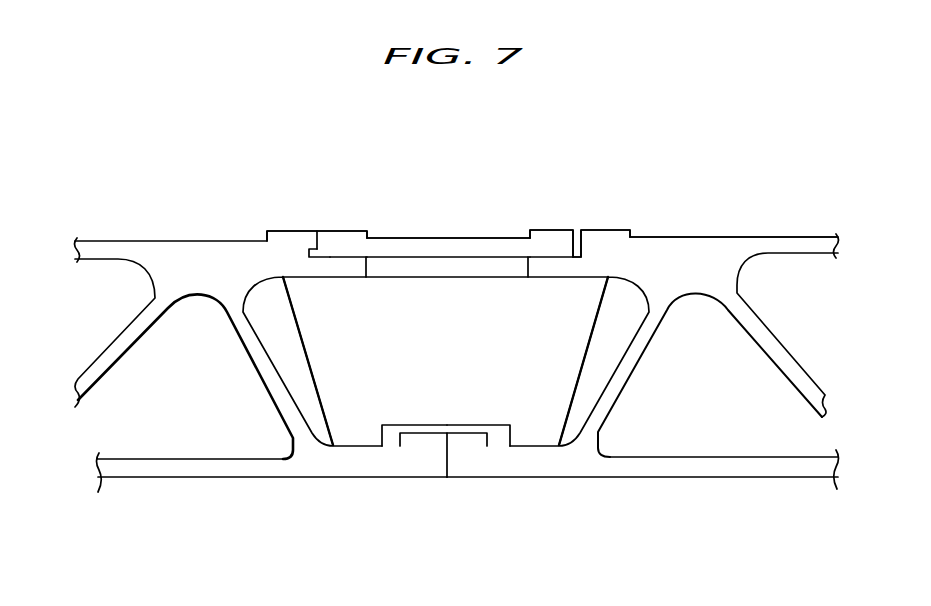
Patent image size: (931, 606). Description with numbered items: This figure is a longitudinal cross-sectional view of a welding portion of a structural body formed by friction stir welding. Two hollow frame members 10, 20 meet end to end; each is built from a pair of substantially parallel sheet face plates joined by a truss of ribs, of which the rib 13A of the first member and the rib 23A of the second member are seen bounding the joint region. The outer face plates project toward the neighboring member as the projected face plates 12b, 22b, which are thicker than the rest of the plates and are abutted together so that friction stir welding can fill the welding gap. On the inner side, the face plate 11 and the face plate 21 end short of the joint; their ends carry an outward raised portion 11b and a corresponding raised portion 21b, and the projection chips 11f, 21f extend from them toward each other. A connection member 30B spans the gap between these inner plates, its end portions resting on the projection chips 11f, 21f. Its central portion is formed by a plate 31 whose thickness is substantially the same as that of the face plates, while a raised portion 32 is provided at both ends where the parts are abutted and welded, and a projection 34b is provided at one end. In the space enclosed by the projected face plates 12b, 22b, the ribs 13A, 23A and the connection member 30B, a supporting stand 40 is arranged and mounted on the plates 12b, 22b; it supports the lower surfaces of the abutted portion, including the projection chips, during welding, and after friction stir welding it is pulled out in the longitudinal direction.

The hollow frame member 10 is at (176, 493).
The face plate 11 is at (102, 237).
The raised portion 11b is at (262, 231).
The projection chip 11f is at (341, 262).
The projected face plate 12b is at (366, 460).
The rib 13A is at (257, 369).
The hollow frame member 20 is at (700, 492).
The face plate 21 is at (798, 236).
The raised portion 21b is at (603, 230).
The projection chip 21f is at (541, 262).
The projected face plate 22b is at (529, 460).
The rib 23A is at (640, 378).
The connection member 30B is at (427, 178).
The plate 31 is at (475, 237).
The raised portion 32 is at (343, 231).
The projection 34b is at (310, 247).
The supporting stand 40 is at (439, 382).